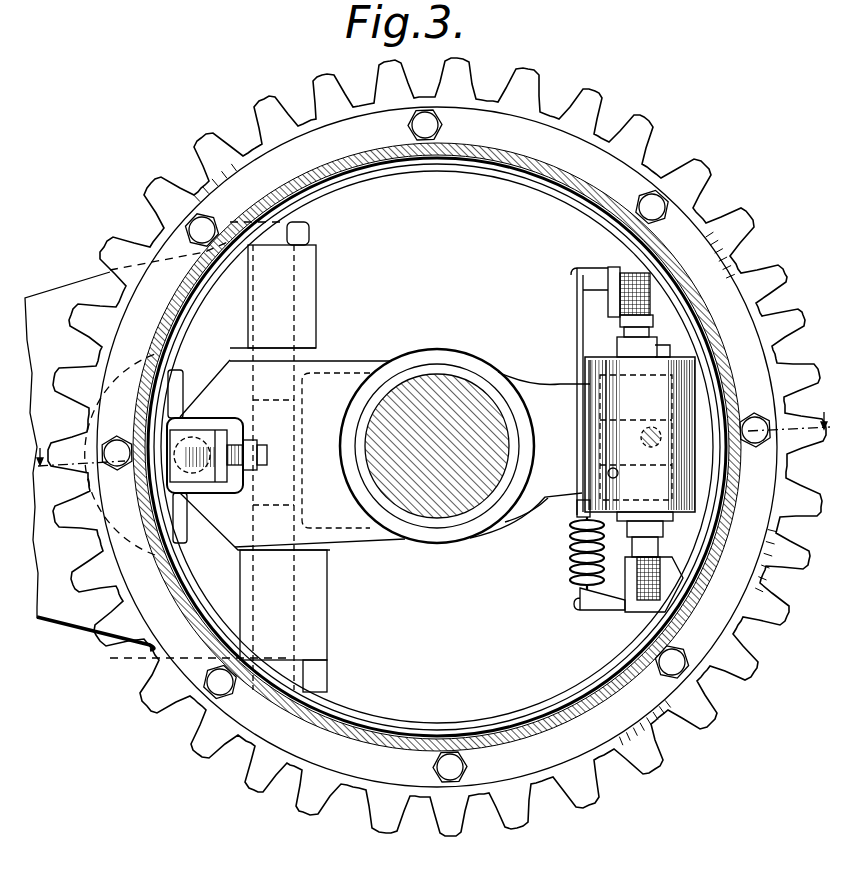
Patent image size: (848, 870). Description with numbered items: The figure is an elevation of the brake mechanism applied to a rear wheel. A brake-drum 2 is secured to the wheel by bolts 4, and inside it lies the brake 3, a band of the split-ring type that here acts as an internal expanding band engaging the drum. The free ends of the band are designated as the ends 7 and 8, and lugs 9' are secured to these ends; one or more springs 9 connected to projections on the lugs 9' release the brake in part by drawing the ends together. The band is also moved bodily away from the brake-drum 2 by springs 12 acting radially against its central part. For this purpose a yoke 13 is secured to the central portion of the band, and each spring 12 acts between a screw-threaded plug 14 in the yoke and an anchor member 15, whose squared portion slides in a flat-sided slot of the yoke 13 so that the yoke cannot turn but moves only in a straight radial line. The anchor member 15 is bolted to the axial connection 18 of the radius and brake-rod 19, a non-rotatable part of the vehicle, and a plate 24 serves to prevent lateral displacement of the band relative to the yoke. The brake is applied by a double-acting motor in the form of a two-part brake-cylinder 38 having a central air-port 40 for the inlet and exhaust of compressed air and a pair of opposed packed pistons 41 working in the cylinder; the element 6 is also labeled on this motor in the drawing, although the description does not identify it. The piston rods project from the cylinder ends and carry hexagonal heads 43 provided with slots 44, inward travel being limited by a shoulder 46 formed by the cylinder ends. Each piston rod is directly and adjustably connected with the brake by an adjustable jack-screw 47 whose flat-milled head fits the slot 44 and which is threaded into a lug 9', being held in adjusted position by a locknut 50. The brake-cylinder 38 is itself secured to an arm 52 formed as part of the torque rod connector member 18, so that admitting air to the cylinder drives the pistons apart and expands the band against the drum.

The brake-drum 2 is at (510, 155).
The brake 3 is at (412, 165).
The bolts 4 is at (432, 449).
The solenoid 6 is at (587, 441).
The free end of the brake band 7 is at (690, 330).
The free end of the brake band 8 is at (717, 533).
The springs 9 is at (569, 553).
The lugs 9' is at (623, 435).
The springs 12 is at (228, 447).
The yoke 13 is at (208, 421).
The screw-threaded plug 14 is at (255, 455).
The anchor member 15 is at (208, 482).
The axial connection 18 is at (367, 361).
The radius and brake-rod 19 is at (57, 292).
The plate 24 is at (265, 465).
The brake-cylinder 38 is at (546, 497).
The central air-port 40 is at (688, 438).
The pistons 41 is at (587, 413).
The polygonal heads 43 is at (619, 347).
The slots 44 is at (663, 352).
The shoulder 46 is at (652, 340).
The adjustable jack-screw 47 is at (624, 332).
The locknut 50 is at (620, 318).
The arm 52 is at (540, 512).